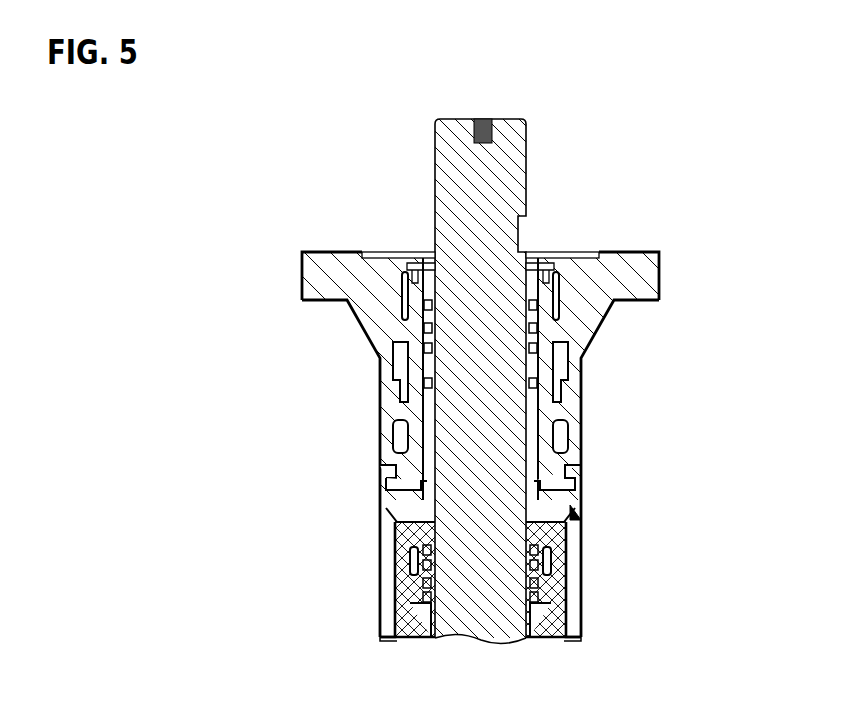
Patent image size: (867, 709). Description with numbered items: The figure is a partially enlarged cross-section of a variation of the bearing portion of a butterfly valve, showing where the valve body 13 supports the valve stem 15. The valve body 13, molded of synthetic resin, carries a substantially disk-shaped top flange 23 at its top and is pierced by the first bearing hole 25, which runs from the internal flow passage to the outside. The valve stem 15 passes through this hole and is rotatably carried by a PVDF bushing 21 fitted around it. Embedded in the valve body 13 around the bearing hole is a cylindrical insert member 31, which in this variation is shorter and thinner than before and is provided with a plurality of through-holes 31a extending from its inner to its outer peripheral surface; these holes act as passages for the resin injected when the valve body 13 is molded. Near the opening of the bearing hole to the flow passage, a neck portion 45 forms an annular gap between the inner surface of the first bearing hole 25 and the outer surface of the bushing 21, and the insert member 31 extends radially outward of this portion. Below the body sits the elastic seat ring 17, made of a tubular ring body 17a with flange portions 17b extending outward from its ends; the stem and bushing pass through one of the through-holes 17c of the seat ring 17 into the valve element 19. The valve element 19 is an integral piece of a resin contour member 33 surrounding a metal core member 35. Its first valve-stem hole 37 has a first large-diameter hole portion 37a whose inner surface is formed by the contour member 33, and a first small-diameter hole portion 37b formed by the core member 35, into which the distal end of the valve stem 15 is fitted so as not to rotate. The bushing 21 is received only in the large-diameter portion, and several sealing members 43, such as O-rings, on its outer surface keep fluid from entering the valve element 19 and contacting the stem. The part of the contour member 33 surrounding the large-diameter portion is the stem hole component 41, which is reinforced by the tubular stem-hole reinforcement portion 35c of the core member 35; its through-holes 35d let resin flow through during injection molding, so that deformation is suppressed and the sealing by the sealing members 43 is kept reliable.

The valve stem 15 is at (448, 165).
The valve body 13 is at (378, 316).
The top flange 23 is at (645, 272).
The through-hole of insert member 31a is at (570, 328).
The insert member 31 is at (570, 392).
The first bearing hole 25 is at (570, 440).
The bushing 21 is at (427, 412).
The sealing members 43 is at (425, 347).
The seat ring 17 is at (324, 508).
The ring body 17a is at (384, 500).
The flange portions 17b is at (384, 468).
The through-holes of seat ring 17c is at (395, 525).
The neck portion 45 is at (580, 478).
The valve element 19 is at (582, 515).
The stem hole component 41 is at (568, 535).
The core member 35 is at (579, 613).
The stem-hole reinforcement portion 35c is at (548, 560).
The through-holes of reinforcement portion 35d is at (552, 588).
The contour member 33 is at (552, 620).
The first valve-stem hole 37 is at (397, 645).
The first large-diameter hole portion 37a is at (445, 613).
The first small-diameter hole portion 37b is at (450, 640).